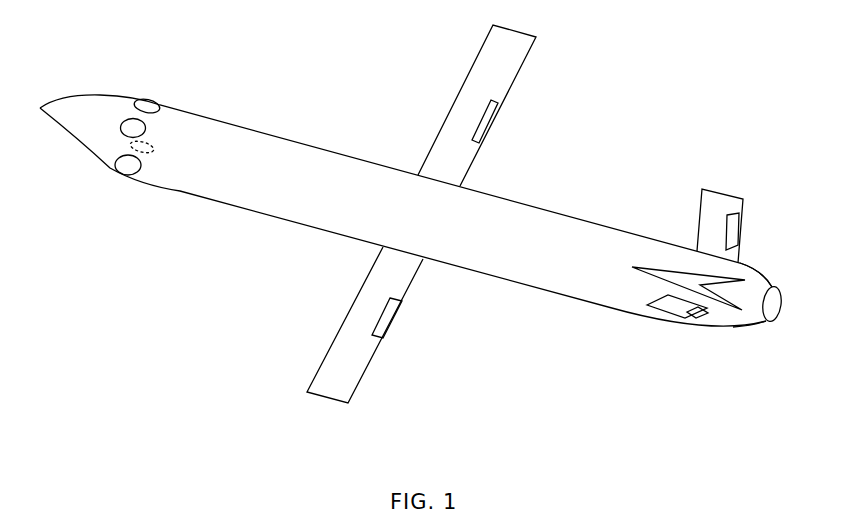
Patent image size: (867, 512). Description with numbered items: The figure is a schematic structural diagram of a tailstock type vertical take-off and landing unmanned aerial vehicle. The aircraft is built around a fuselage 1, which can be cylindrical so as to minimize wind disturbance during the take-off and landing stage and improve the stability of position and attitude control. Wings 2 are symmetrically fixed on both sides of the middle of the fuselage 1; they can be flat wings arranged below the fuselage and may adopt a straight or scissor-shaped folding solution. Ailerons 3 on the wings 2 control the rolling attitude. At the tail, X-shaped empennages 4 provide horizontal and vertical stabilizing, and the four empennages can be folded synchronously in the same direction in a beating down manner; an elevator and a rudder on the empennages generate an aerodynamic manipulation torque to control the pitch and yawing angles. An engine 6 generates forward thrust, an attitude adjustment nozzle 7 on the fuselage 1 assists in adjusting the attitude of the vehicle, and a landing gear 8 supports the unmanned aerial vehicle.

The fuselage 1 is at (252, 188).
The wings 2 is at (335, 378).
The ailerons 3 is at (385, 320).
The empennages 4 is at (717, 202).
The engine 6 is at (747, 298).
The attitude adjustment nozzle 7 is at (133, 130).
The landing gear 8 is at (668, 277).